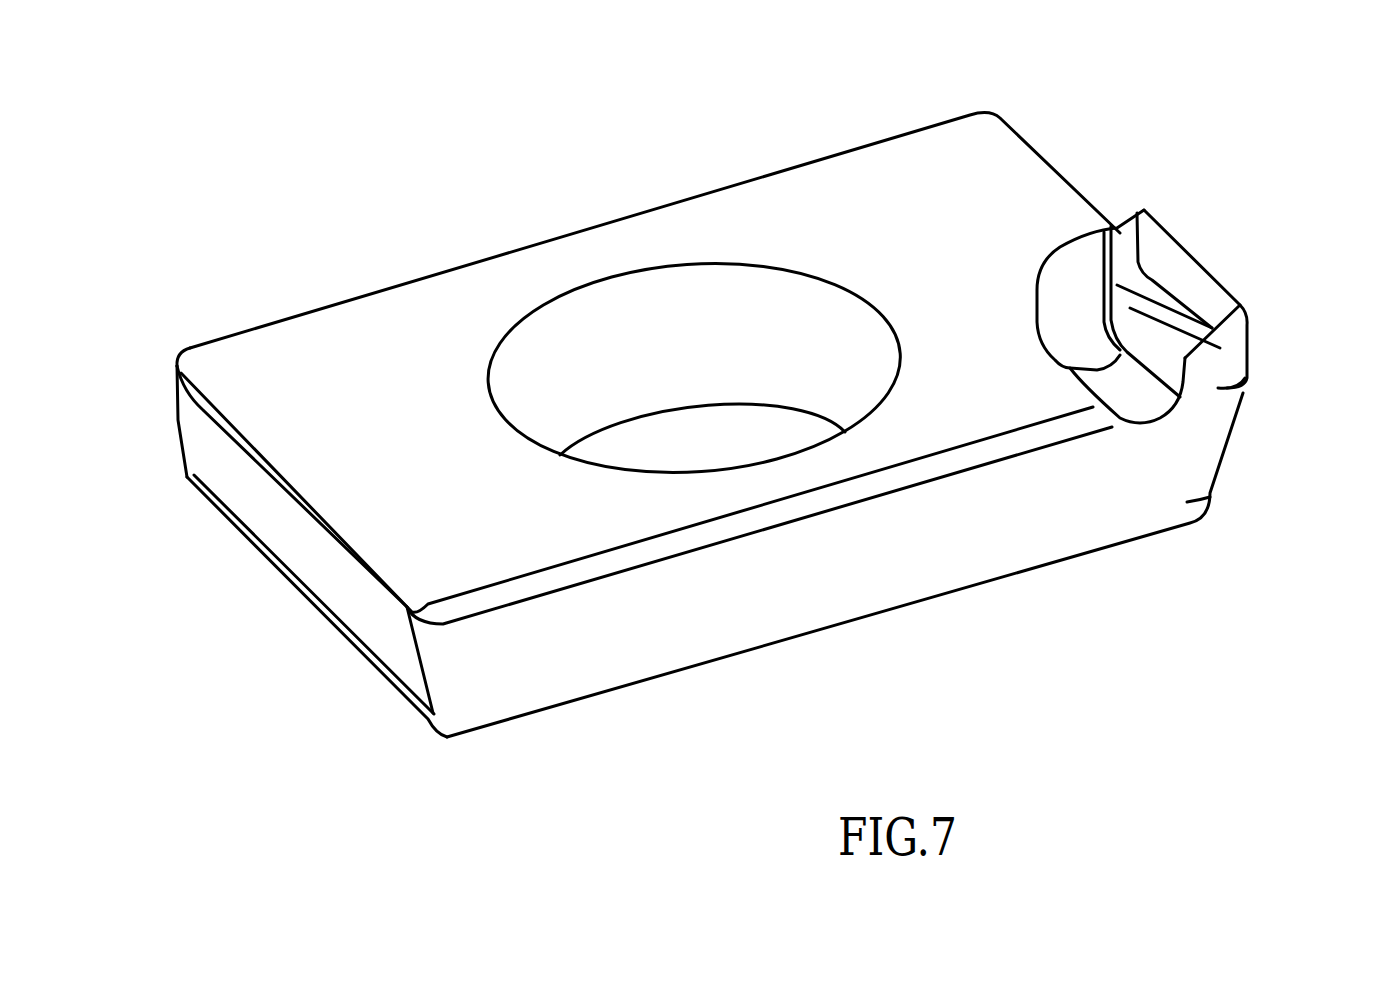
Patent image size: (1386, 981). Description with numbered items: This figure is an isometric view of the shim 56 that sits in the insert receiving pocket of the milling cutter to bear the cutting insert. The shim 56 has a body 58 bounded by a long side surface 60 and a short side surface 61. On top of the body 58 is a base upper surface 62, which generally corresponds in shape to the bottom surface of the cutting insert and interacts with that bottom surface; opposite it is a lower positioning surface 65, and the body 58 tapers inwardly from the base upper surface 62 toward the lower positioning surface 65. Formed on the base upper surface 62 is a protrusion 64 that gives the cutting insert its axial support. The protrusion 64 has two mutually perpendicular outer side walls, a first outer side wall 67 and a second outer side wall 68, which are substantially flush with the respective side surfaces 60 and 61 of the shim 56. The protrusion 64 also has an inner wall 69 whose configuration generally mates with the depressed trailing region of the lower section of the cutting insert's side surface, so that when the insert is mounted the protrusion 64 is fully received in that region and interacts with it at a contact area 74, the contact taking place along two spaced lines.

The shim 56 is at (683, 165).
The body 58 is at (533, 282).
The long side surface 60 is at (319, 303).
The short side surface 61 is at (1085, 162).
The base upper surface 62 is at (407, 430).
The protrusion 64 is at (1172, 261).
The lower positioning surface 65 is at (968, 594).
The first outer side wall 67 is at (1227, 356).
The second outer side wall 68 is at (1177, 239).
The inner wall 69 is at (1183, 339).
The contact area 74 is at (1130, 325).